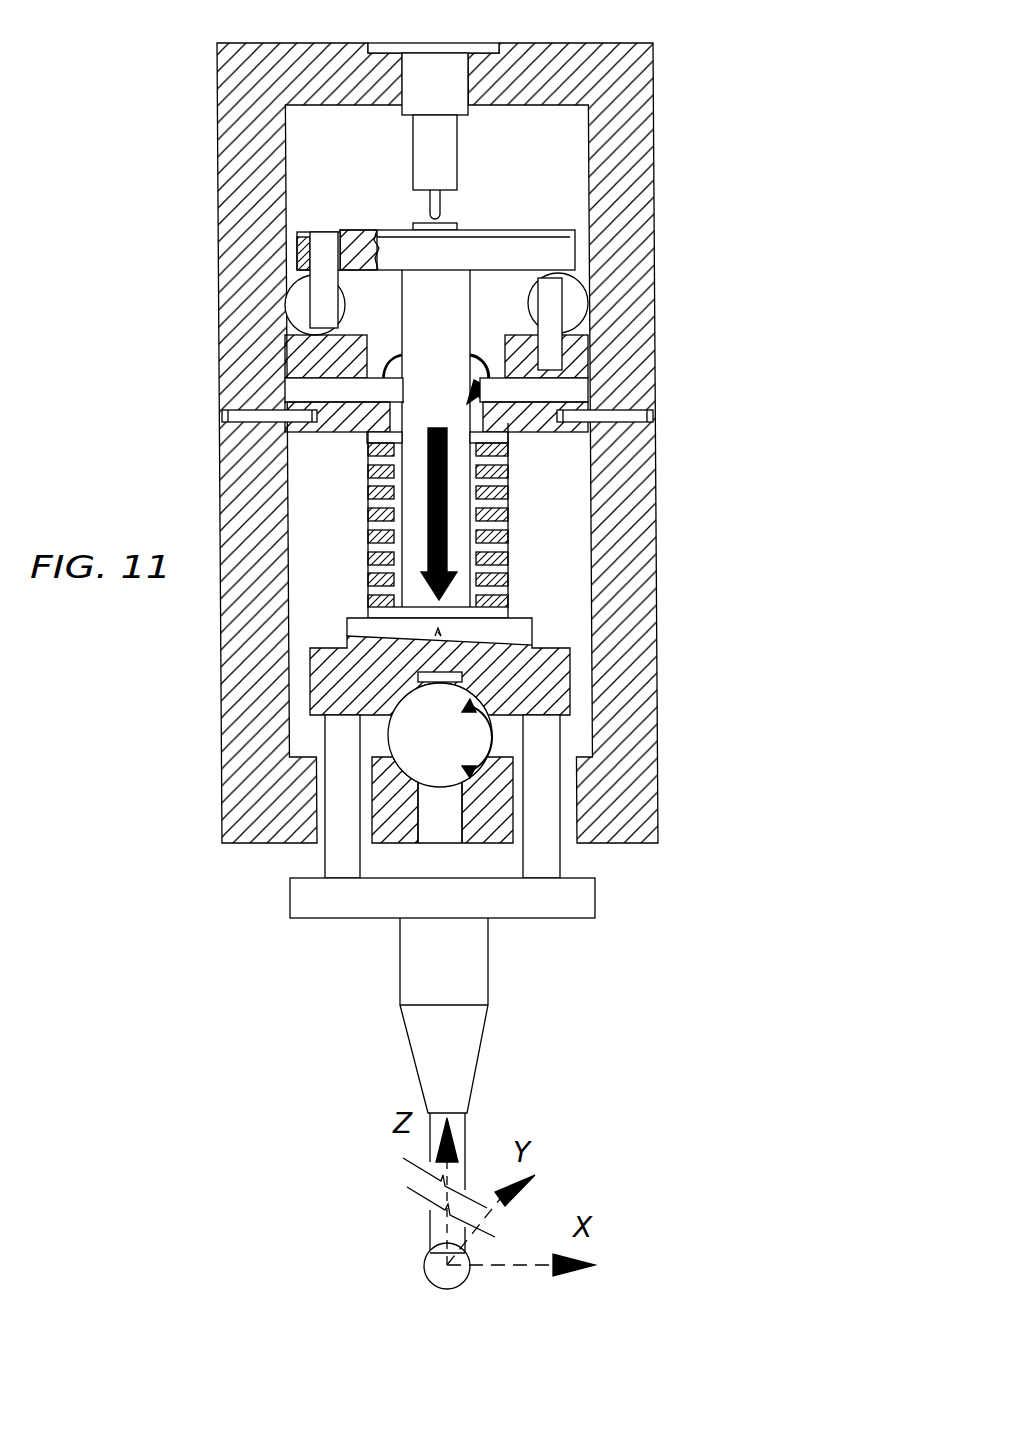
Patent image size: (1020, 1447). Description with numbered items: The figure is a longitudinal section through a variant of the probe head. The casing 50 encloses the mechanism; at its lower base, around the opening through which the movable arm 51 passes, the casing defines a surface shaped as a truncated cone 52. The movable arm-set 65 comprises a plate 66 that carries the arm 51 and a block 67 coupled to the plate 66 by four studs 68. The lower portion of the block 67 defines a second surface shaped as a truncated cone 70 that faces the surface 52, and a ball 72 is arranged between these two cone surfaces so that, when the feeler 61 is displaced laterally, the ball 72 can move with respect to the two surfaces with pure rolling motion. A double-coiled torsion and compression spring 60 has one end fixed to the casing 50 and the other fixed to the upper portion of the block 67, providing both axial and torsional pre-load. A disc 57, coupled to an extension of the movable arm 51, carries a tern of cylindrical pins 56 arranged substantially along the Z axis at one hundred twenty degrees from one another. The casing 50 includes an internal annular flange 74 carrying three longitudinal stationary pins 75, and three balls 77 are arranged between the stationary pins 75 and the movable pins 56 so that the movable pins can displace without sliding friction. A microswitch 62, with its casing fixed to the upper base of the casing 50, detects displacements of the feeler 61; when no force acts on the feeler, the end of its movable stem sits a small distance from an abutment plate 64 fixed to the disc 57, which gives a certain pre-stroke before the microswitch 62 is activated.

The casing 50 is at (637, 472).
The movable arm 51 is at (455, 1060).
The truncated-cone surface 52 is at (458, 762).
The cylindrical pins 56 is at (320, 270).
The disc 57 is at (447, 224).
The double-coiled spring 60 is at (510, 575).
The feeler 61 is at (453, 1277).
The microswitch 62 is at (590, 103).
The abutment plate 64 is at (437, 143).
The movable arm-set 65 is at (442, 1111).
The plate 66 is at (568, 900).
The block 67 is at (585, 668).
The studs 68 is at (550, 860).
The truncated-cone surface 70 is at (567, 688).
The ball 72 is at (438, 748).
The internal annular flange 74 is at (355, 375).
The longitudinal pins 75 is at (565, 297).
The balls 77 is at (548, 252).